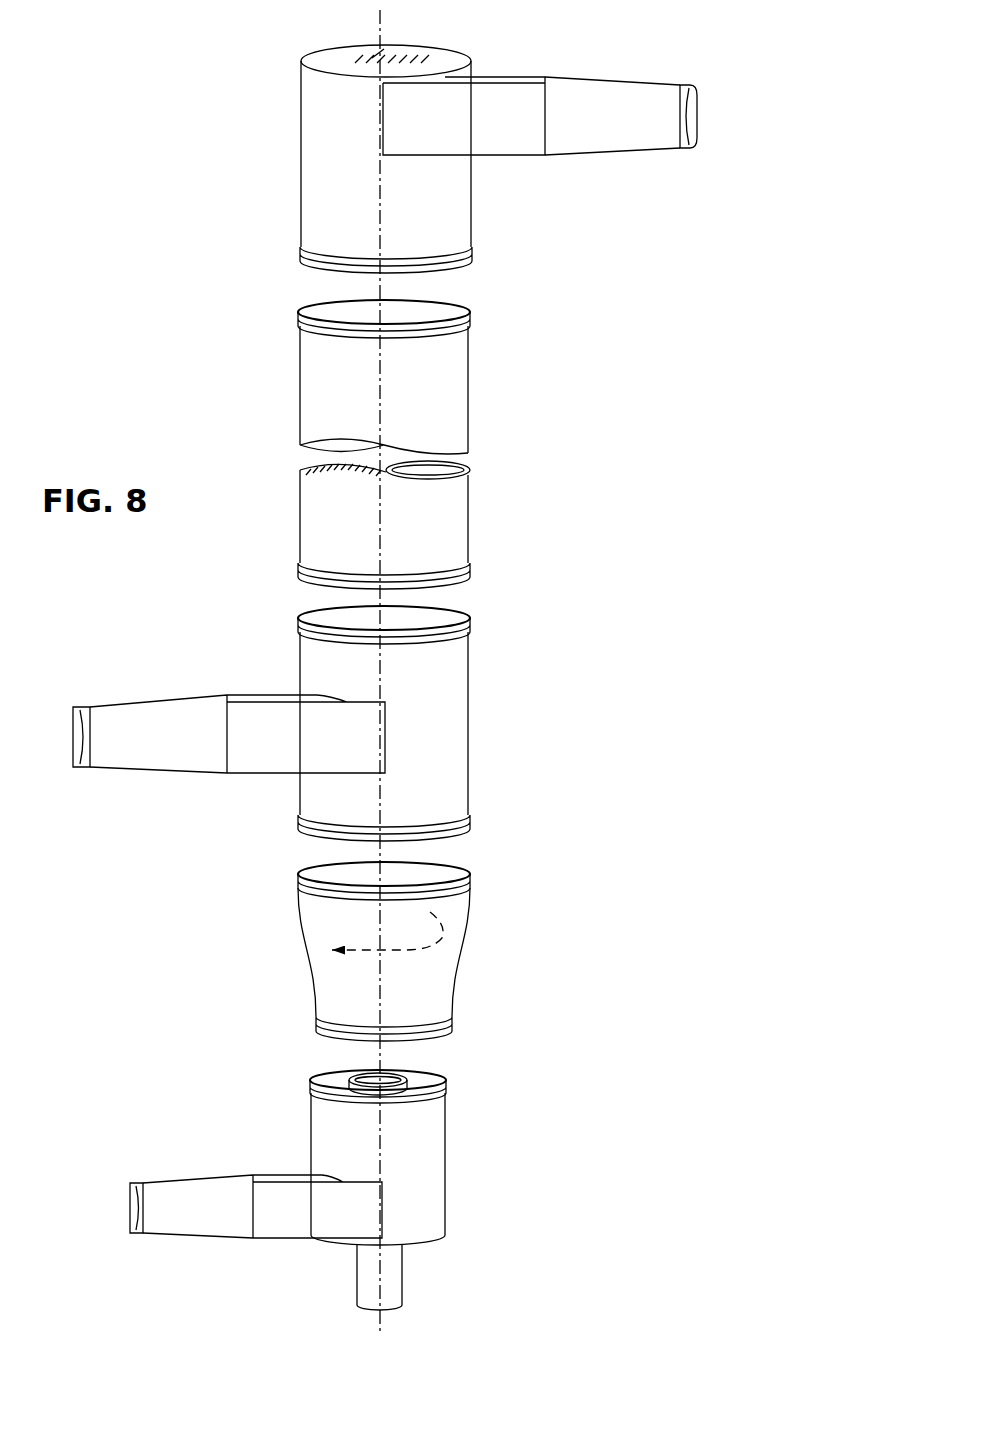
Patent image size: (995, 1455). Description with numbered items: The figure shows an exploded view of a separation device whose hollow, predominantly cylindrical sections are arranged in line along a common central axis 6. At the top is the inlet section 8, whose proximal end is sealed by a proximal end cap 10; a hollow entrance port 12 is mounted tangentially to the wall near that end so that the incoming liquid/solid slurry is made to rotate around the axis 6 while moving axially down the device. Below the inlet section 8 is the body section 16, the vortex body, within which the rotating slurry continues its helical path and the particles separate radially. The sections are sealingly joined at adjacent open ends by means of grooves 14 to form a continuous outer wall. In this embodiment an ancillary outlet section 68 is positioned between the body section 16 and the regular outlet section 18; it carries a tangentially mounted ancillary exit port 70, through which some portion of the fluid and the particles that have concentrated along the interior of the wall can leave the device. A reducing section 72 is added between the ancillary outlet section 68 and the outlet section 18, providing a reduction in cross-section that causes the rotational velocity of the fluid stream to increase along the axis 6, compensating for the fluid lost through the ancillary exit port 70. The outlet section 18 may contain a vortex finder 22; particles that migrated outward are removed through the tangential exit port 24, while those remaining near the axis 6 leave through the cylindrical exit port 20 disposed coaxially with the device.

The common central axis 6 is at (380, 12).
The inlet section 8 is at (518, 207).
The proximal end cap 10 is at (442, 53).
The entrance port 12 is at (600, 78).
The groove 14 is at (473, 251).
The body section 16 is at (511, 390).
The outlet section 18 is at (469, 1167).
The cylindrical exit port 20 is at (403, 1270).
The vortex finder 22 is at (410, 1074).
The tangential exit port 24 is at (221, 1178).
The ancillary outlet section 68 is at (499, 725).
The ancillary exit port 70 is at (200, 697).
The reducing section 72 is at (495, 950).